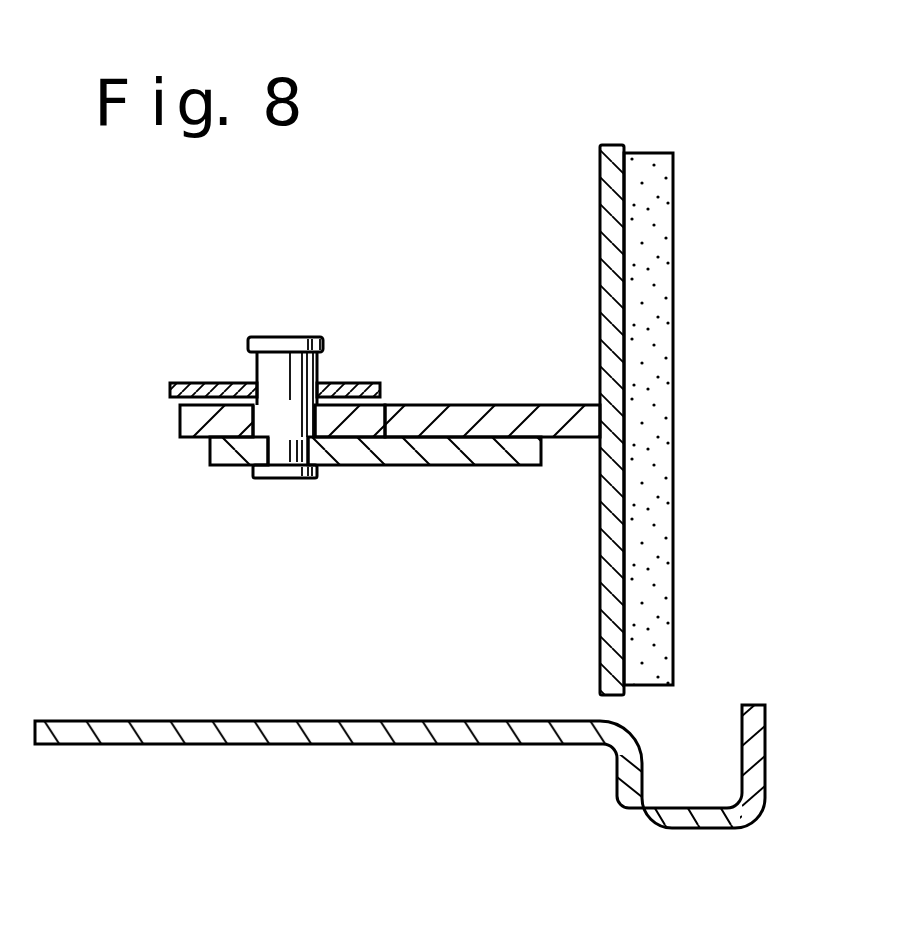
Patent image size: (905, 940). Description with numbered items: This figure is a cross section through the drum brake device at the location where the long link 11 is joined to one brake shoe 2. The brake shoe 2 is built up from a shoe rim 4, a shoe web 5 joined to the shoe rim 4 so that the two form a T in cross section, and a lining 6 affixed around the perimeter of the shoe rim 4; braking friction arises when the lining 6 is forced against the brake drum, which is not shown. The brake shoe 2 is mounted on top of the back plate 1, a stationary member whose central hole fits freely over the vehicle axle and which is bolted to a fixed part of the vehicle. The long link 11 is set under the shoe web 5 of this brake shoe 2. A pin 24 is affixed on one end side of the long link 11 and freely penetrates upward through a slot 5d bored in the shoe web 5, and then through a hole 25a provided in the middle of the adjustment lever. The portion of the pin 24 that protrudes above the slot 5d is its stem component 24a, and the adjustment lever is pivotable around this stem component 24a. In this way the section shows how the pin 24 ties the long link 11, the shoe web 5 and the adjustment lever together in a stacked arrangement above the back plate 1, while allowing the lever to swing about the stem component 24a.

The back plate 1 is at (378, 743).
The brake shoe 2 is at (691, 359).
The shoe rim 4 is at (615, 148).
The shoe web 5 is at (533, 405).
The slot 5d is at (377, 413).
The lining 6 is at (665, 192).
The long link 11 is at (430, 467).
The pin 24 is at (282, 478).
The stem component 24a is at (263, 372).
The hole 25a is at (332, 385).